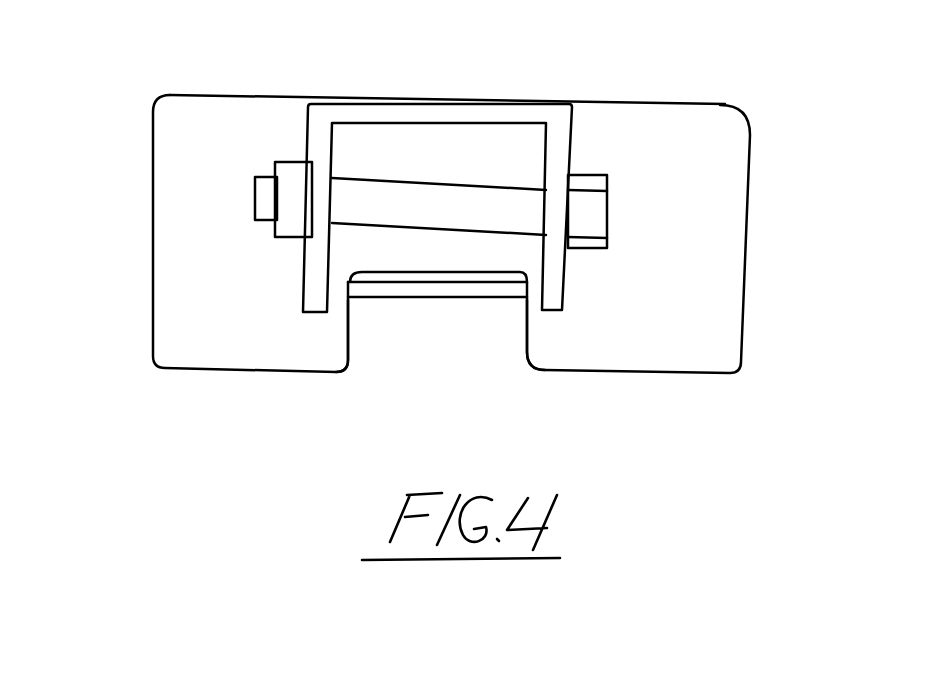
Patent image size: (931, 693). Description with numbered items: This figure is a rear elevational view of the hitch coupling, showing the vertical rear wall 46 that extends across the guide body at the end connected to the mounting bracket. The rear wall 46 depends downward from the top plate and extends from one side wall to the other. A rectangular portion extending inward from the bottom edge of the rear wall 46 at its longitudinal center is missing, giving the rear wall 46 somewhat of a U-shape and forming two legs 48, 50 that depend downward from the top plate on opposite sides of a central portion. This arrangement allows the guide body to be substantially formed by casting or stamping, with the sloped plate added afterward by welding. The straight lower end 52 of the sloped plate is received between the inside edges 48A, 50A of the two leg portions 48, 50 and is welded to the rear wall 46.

The rear wall 46 is at (446, 68).
The leg 48 is at (191, 233).
The leg 50 is at (686, 239).
The lower end of the sloped plate 52 is at (431, 210).
The inside edge 48A is at (308, 381).
The inside edge 50A is at (532, 382).